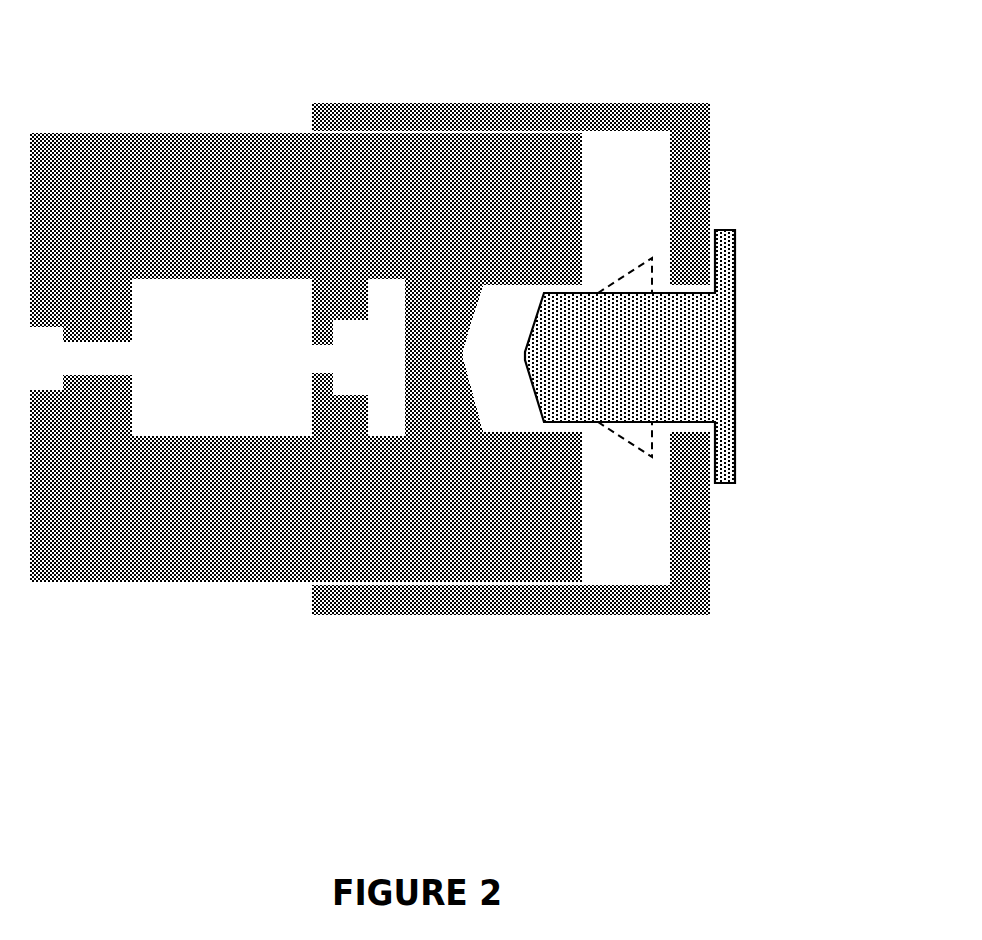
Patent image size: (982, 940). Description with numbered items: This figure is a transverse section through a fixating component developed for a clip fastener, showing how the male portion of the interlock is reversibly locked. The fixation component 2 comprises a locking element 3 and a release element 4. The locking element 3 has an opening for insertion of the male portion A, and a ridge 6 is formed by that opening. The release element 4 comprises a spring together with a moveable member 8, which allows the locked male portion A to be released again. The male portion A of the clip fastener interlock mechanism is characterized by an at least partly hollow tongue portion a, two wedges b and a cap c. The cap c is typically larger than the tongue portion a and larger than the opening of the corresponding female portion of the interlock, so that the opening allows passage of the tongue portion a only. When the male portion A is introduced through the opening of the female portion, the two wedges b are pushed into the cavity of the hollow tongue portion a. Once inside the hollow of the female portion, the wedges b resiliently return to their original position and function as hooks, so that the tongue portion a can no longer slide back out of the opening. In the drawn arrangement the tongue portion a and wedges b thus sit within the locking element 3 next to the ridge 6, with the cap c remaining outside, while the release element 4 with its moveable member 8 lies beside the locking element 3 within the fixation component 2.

The fixation component 2 is at (217, 95).
The locking element 3 is at (662, 250).
The release element 4 is at (463, 348).
The ridge 6 is at (680, 283).
The moveable member 8 is at (330, 410).
The tongue portion a is at (563, 375).
The wedge b is at (643, 283).
The cap c is at (727, 475).
The male portion of an interlock A is at (670, 385).